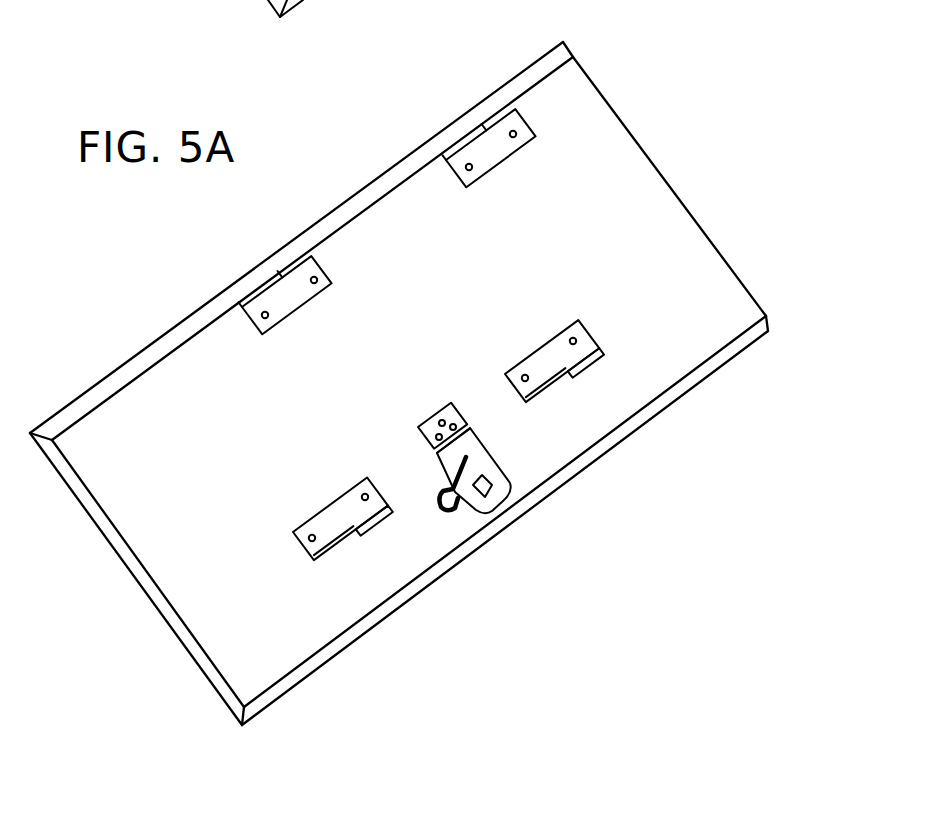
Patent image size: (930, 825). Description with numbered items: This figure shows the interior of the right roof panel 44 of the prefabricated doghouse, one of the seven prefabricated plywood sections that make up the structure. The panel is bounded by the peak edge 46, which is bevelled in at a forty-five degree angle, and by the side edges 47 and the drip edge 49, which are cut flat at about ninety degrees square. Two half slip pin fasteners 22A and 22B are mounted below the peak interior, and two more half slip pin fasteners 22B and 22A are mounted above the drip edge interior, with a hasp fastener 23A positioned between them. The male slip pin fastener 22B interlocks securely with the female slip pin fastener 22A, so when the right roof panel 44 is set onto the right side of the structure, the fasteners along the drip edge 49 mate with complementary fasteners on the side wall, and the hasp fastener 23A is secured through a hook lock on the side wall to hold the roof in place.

The right roof panel 44 is at (399, 362).
The peak edge 46 is at (301, 241).
The side edges 47 is at (364, 428).
The drip edge 49 is at (577, 476).
The female slip pin fastener 22A is at (414, 350).
The male slip pin fastener 22B is at (633, 456).
The hasp fastener 23A is at (500, 492).